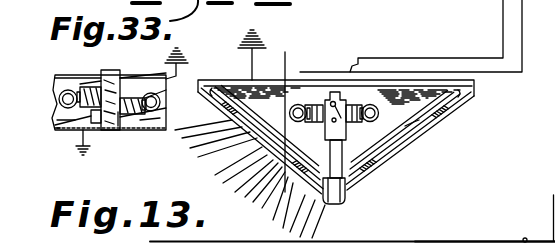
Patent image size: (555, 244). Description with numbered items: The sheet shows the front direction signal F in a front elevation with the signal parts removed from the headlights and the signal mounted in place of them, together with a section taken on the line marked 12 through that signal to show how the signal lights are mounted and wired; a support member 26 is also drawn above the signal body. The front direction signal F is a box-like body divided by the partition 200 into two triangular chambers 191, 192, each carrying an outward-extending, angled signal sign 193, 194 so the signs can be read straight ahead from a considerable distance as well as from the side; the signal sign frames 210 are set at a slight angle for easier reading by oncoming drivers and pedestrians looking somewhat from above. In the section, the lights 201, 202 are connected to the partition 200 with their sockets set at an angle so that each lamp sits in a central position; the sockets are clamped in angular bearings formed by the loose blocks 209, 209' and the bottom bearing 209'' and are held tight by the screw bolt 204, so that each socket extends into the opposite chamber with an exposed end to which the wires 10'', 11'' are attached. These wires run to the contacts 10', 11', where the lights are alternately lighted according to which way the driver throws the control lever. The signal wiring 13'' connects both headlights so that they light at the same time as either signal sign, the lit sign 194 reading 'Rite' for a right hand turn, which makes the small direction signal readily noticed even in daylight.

In FIG. 33, the contact 10' is at (67, 140).
In FIG. 13, the wire 10'' is at (411, 36).
In FIG. 33, the contact 11' is at (143, 79).
In FIG. 13, the wire 11'' is at (440, 51).
In FIG. 13, the section line 12 is at (279, 182).
In FIG. 13, the signal wiring 13'' is at (485, 183).
In FIG. 13, the pyramid symbol support 26 is at (252, 62).
In FIG. 33, the triangular chamber 191 is at (145, 128).
In FIG. 13, the triangular chamber 191 is at (420, 136).
In FIG. 33, the triangular chamber 192 is at (61, 130).
In FIG. 13, the triangular chamber 192 is at (270, 120).
In FIG. 13, the signal sign 193 is at (452, 122).
In FIG. 13, the signal sign 194 is at (244, 106).
In FIG. 13, the partition 200 is at (341, 152).
In FIG. 33, the light 201 is at (68, 47).
In FIG. 13, the light 201 is at (300, 104).
In FIG. 33, the light 202 is at (160, 99).
In FIG. 13, the light 202 is at (371, 104).
In FIG. 33, the screw bolt 204 is at (107, 72).
In FIG. 13, the screw bolt 204 is at (344, 122).
In FIG. 33, the loose block 209 is at (110, 80).
In FIG. 13, the loose block 209 is at (314, 126).
In FIG. 33, the loose block 209' is at (109, 139).
In FIG. 33, the bottom bearing 209'' is at (122, 150).
In FIG. 13, the signal sign frame 210 is at (350, 186).
In FIG. 13, the front direction signal F is at (428, 134).